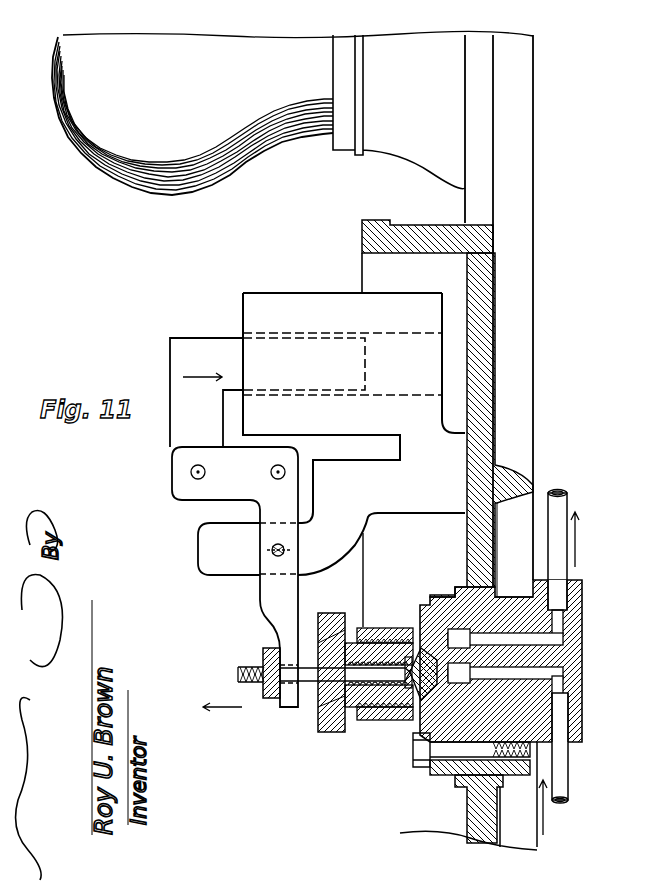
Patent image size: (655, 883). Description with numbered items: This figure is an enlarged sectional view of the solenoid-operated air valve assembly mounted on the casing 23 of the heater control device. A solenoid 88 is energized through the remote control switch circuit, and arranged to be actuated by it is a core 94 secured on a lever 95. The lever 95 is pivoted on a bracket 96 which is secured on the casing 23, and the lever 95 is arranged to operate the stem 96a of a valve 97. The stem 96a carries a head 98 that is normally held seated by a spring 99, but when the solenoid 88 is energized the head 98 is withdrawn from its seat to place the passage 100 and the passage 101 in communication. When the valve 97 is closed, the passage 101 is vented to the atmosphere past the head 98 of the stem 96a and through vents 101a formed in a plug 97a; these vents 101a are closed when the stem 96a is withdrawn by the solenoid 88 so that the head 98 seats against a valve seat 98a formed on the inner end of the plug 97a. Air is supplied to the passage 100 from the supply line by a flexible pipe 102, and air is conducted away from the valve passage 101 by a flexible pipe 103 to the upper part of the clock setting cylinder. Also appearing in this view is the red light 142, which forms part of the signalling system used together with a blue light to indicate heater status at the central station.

The red light 142 is at (218, 185).
The casing 23 is at (493, 283).
The solenoid 88 is at (285, 298).
The core 94 is at (200, 345).
The lever 95 is at (215, 488).
The bracket 96 is at (331, 550).
The stem 96a is at (310, 685).
The valve 97 is at (427, 647).
The plug 97a is at (322, 732).
The head 98 is at (418, 702).
The valve seat 98a is at (410, 647).
The spring 99 is at (373, 718).
The passage 100 is at (525, 680).
The passage 101 is at (508, 633).
The vents 101a is at (327, 647).
The flexible pipe 102 is at (563, 763).
The flexible pipe 103 is at (563, 545).